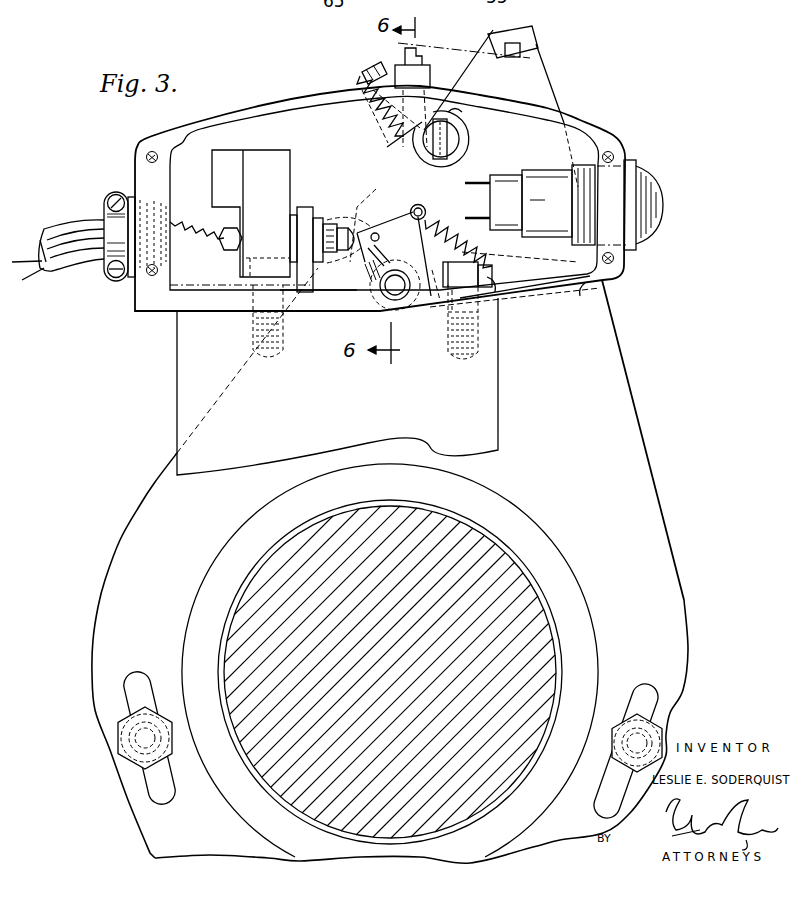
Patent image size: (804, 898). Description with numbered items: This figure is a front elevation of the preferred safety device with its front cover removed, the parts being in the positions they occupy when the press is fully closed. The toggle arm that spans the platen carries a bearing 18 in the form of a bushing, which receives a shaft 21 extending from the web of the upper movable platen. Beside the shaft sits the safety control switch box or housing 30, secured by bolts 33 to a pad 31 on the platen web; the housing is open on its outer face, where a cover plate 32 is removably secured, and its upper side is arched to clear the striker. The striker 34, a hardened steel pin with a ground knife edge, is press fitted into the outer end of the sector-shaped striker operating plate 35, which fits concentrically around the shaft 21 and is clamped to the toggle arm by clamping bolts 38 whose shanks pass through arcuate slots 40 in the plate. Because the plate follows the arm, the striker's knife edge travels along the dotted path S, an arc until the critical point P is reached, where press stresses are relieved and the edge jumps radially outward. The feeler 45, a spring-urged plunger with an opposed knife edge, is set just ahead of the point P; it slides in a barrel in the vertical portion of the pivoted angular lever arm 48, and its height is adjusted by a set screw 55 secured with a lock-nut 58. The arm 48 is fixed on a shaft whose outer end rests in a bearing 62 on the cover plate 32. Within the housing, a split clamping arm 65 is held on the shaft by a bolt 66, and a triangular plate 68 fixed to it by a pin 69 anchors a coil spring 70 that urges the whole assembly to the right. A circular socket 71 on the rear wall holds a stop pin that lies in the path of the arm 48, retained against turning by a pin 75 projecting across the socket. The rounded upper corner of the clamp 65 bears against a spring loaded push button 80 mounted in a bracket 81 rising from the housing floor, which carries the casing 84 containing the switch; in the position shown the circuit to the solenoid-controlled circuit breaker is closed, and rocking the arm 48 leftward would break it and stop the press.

The bearings 18 is at (580, 597).
The shafts 21 is at (540, 672).
The safety control switch box or housing 30 is at (578, 125).
The pad 31 is at (193, 385).
The cover plate 32 is at (573, 3).
The bolts 33 is at (470, 352).
The striker 34 is at (542, 42).
The striker operating plate 35 is at (624, 378).
The clamping bolts 38 is at (117, 740).
The arcuate slots 40 is at (122, 682).
The feeler 45 is at (402, 52).
The pivoted angular lever arm 48 is at (580, 296).
The set screw 55 is at (365, 64).
The lock-nut 58 is at (365, 74).
The bearing 62 is at (370, 5).
The split clamping arm 65 is at (362, 258).
The bolt 66 is at (436, 292).
The triangular plate 68 is at (424, 216).
The pin 69 is at (376, 212).
The coil spring 70 is at (442, 231).
The circular socket 71 is at (475, 149).
The pin 75 is at (446, 136).
The spring loaded push button 80 is at (340, 226).
The bracket 81 is at (310, 206).
The casing 84 is at (281, 160).
The critical point P is at (430, 45).
The path of the striker knife edge S is at (449, 59).